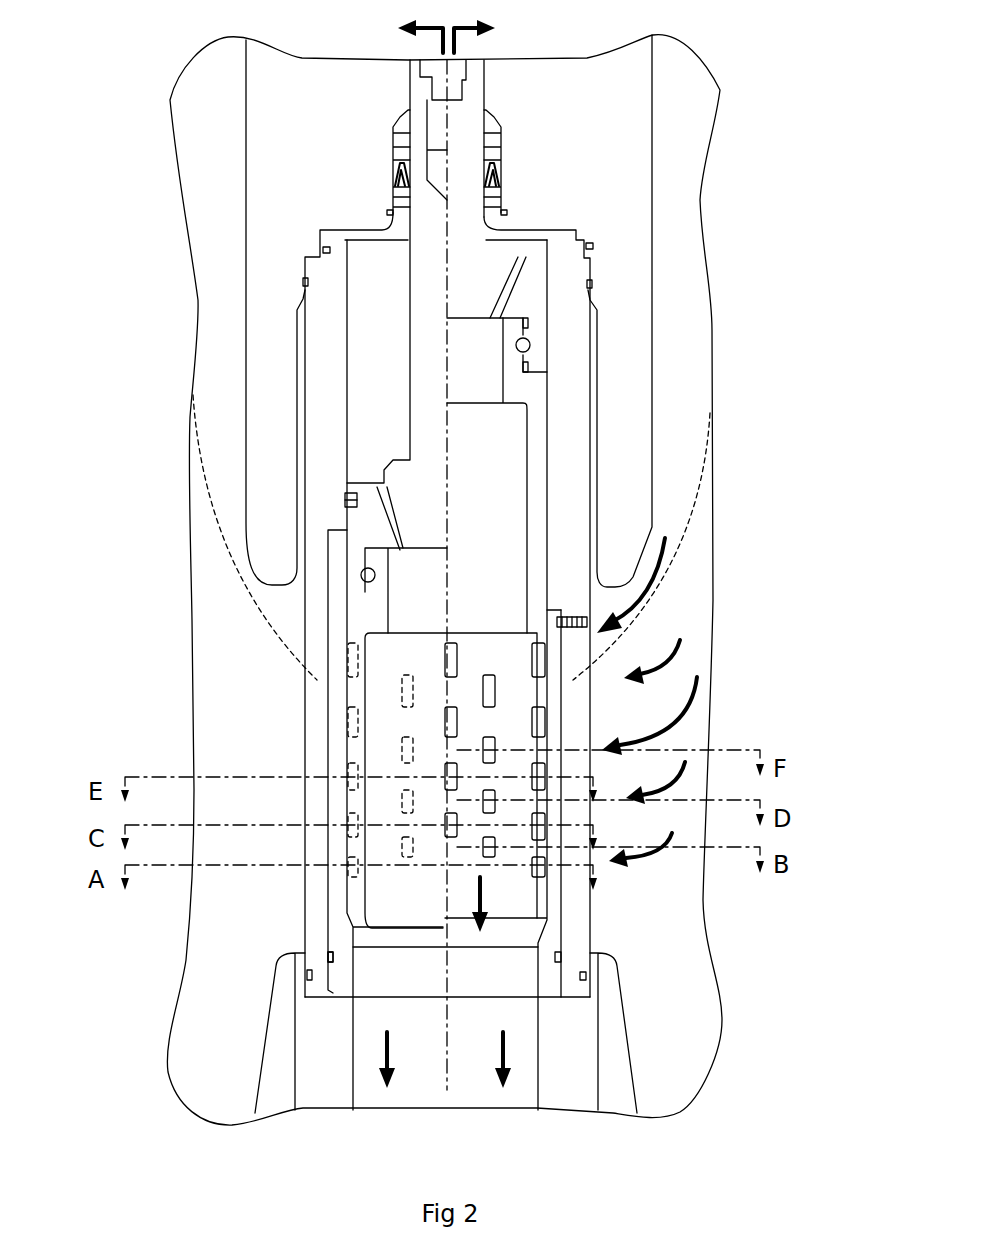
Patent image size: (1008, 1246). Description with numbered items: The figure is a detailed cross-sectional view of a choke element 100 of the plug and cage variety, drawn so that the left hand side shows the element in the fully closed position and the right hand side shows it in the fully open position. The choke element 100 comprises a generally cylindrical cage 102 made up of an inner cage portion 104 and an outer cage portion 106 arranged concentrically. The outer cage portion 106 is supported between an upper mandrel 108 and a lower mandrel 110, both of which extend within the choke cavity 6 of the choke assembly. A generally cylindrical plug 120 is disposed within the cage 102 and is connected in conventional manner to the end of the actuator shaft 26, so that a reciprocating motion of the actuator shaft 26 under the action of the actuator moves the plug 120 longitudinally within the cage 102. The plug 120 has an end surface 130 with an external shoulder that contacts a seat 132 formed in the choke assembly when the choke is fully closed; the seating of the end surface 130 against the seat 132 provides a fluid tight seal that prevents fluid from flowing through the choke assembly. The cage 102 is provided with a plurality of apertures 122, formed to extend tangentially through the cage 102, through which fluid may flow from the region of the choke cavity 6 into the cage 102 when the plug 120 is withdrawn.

The choke cavity 6 is at (230, 666).
The actuator shaft 26 is at (400, 157).
The choke element 100 is at (788, 500).
The cage 102 is at (543, 715).
The inner cage portion 104 is at (557, 658).
The outer cage portion 106 is at (577, 733).
The upper mandrel 108 is at (635, 367).
The lower mandrel 110 is at (573, 1057).
The plug 120 is at (340, 890).
The apertures 122 is at (485, 758).
The end surface 130 is at (347, 943).
The seat 132 is at (540, 920).